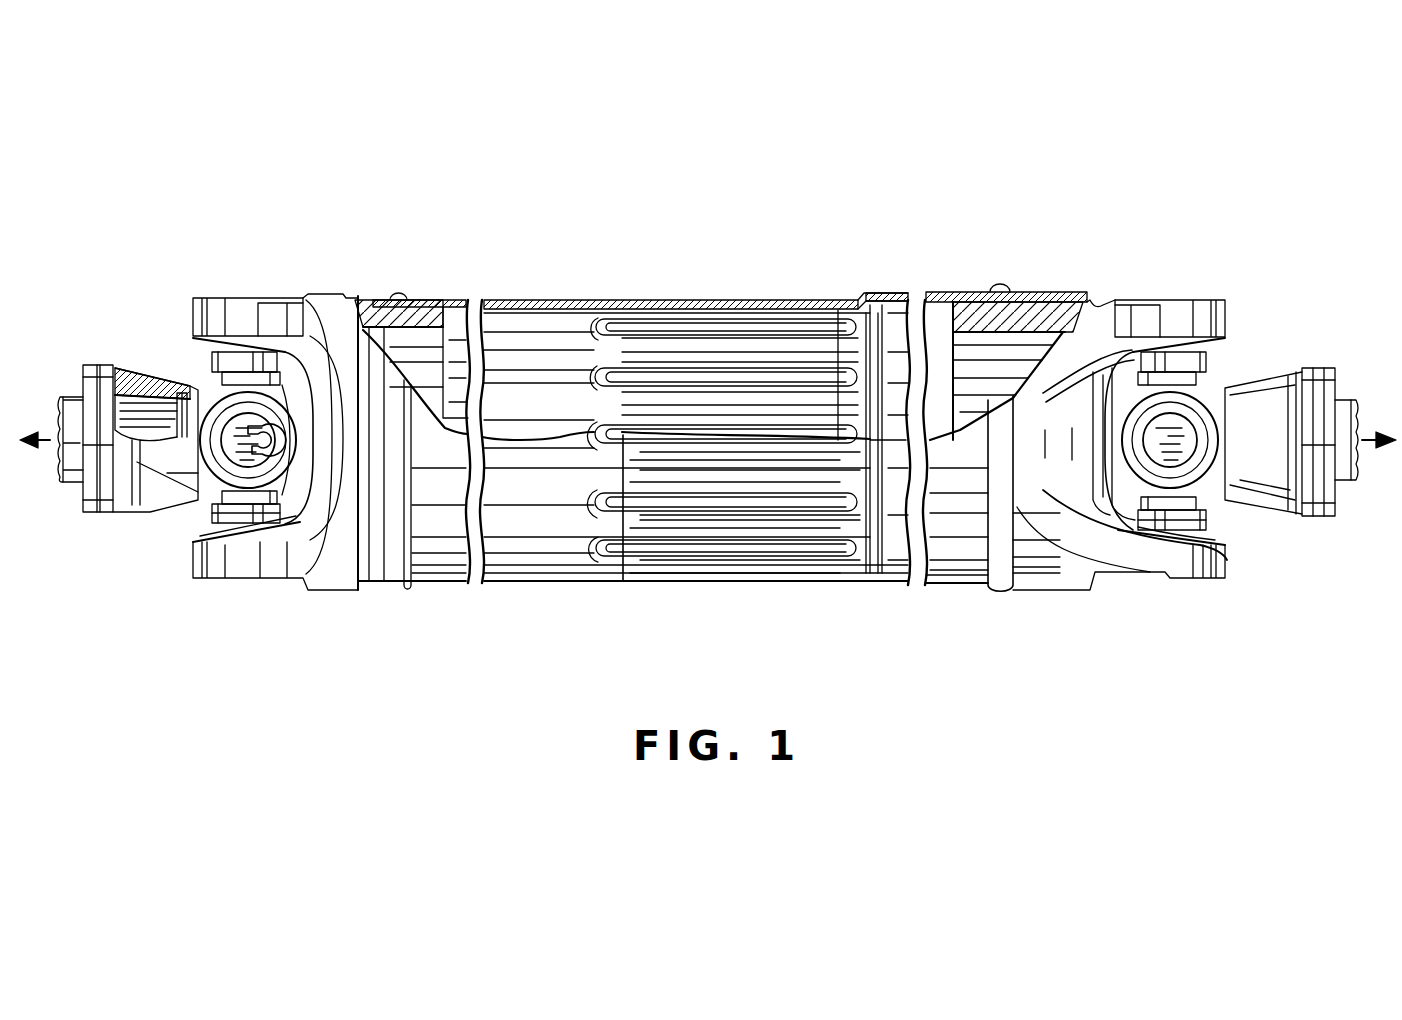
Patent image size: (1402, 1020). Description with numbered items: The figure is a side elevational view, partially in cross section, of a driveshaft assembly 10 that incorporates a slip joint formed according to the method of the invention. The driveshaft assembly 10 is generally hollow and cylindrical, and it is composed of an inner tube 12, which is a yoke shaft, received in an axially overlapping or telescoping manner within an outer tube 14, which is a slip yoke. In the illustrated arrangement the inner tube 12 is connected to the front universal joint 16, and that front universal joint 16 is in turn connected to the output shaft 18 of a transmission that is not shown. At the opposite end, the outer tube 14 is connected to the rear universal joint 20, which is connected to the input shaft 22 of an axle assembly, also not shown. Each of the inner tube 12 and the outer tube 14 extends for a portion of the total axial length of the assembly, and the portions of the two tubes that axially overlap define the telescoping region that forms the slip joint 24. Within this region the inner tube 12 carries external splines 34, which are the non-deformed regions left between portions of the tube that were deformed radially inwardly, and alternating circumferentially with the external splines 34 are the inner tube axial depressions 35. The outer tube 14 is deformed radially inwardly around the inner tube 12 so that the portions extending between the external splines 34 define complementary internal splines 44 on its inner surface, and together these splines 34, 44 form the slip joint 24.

The driveshaft assembly 10 is at (256, 176).
The inner tube 12 is at (571, 292).
The outer tube 14 is at (889, 297).
The front universal joint 16 is at (217, 300).
The output shaft 18 is at (66, 478).
The rear universal joint 20 is at (1193, 304).
The input shaft 22 is at (1350, 480).
The slip joint 24 is at (834, 236).
The external splines 34 is at (606, 400).
The inner tube axial depressions 35 is at (718, 368).
The internal splines 44 is at (770, 440).